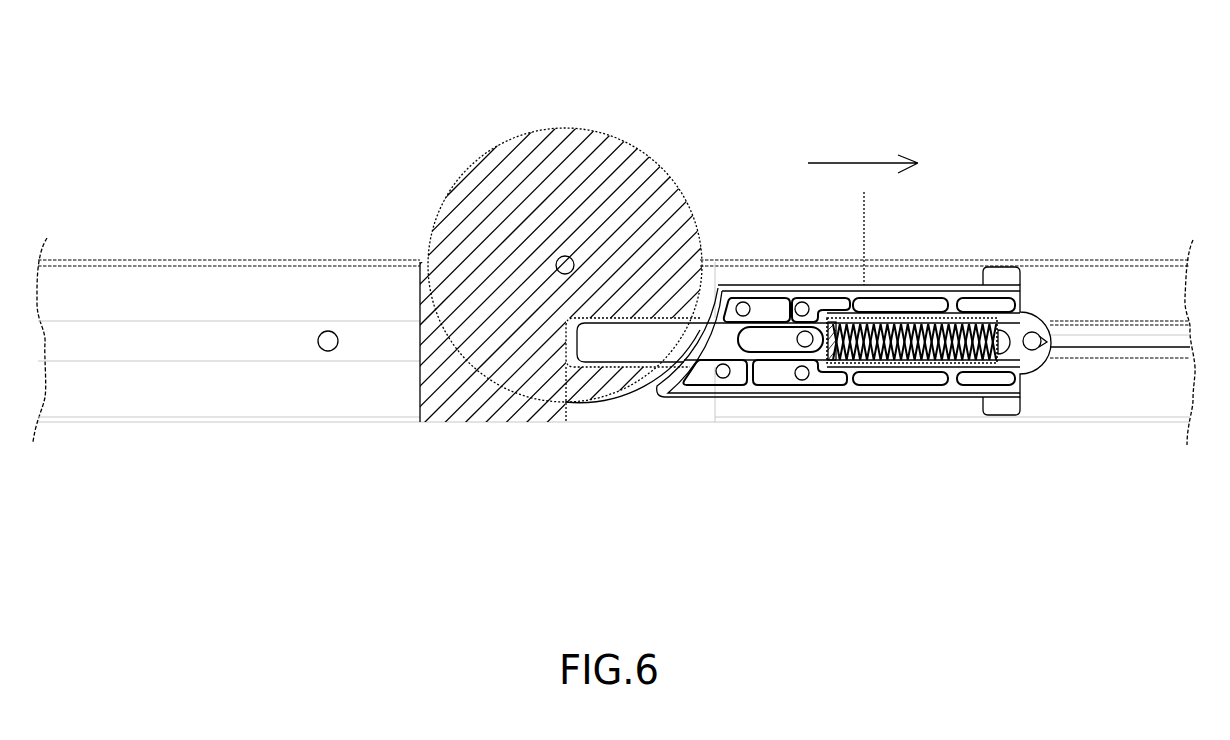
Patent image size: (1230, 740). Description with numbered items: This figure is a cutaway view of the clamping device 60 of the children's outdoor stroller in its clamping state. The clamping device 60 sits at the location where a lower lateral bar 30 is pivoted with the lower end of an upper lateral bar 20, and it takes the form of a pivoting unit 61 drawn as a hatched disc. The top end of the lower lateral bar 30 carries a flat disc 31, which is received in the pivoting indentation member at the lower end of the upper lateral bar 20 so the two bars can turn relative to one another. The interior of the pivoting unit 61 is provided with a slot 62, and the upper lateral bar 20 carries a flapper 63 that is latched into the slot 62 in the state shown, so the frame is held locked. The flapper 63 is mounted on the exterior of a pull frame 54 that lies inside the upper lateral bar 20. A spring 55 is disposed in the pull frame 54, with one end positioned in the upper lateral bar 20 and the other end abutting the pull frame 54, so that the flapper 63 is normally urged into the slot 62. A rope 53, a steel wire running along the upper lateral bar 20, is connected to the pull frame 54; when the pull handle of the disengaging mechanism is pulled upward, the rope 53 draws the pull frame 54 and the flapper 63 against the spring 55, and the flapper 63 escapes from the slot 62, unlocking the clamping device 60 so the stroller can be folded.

The upper lateral bar 20 is at (1133, 282).
The lower lateral bar 30 is at (282, 285).
The flat disc 31 is at (558, 140).
The rope 53 is at (1108, 342).
The pull frame 54 is at (1023, 327).
The spring 55 is at (928, 325).
The clamping device 60 is at (803, 445).
The pivoting unit 61 is at (687, 145).
The slot 62 is at (566, 403).
The flapper 63 is at (630, 348).